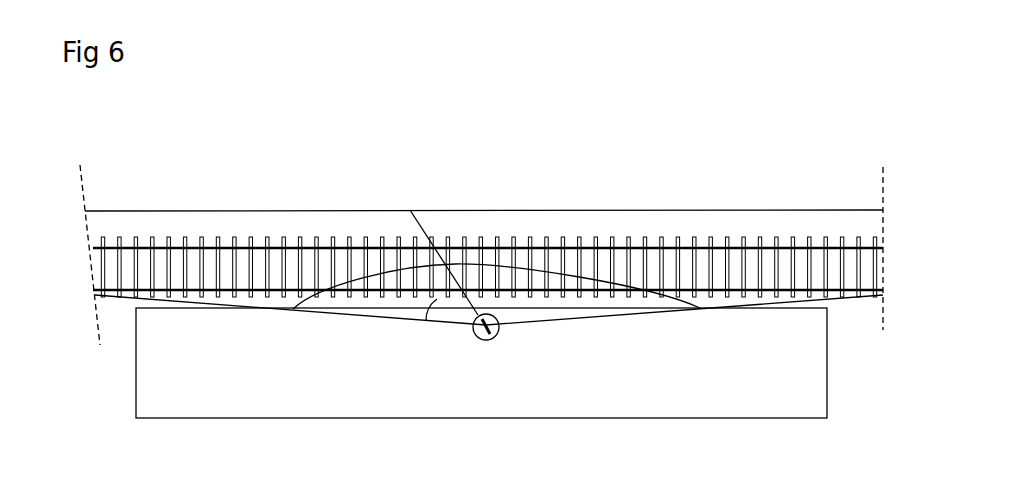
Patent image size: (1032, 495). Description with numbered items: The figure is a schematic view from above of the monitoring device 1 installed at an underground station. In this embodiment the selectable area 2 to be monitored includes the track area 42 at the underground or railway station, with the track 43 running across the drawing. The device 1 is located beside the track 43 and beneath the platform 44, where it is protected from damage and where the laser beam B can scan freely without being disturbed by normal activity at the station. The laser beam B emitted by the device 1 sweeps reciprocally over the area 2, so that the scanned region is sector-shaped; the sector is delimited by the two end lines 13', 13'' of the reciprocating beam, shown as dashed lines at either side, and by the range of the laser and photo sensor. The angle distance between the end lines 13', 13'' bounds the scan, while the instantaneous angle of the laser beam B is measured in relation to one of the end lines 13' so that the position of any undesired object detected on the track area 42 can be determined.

The device 1 is at (477, 337).
The selectable area 2 is at (482, 210).
The end line 13' is at (105, 279).
The end line 13'' is at (859, 275).
The track area 42 is at (703, 308).
The track 43 is at (732, 246).
The platform 44 is at (543, 392).
The laser beam B is at (410, 210).